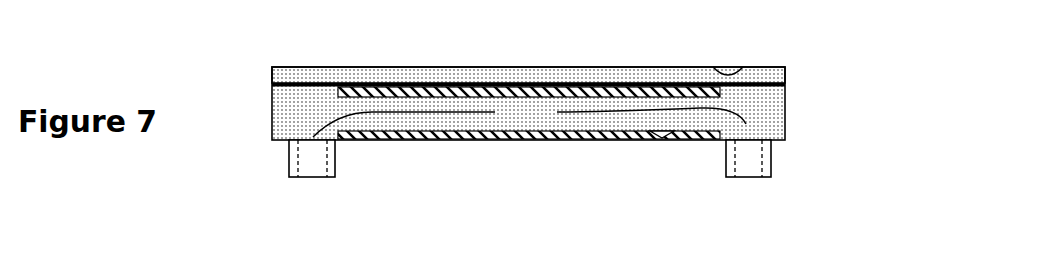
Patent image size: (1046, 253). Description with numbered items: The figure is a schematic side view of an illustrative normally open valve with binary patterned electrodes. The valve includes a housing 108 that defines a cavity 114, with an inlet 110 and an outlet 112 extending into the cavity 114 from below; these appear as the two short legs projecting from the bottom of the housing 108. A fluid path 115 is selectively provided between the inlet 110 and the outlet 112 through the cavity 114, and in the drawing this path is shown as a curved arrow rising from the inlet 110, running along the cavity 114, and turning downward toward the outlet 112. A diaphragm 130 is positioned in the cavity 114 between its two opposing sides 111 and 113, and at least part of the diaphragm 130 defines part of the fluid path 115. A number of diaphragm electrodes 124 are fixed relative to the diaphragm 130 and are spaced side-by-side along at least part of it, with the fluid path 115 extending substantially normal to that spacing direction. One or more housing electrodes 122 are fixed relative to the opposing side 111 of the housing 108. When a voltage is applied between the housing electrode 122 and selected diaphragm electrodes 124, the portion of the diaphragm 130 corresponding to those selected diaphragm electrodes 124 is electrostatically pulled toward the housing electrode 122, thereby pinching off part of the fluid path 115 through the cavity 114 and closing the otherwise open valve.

The housing 108 is at (258, 112).
The inlet 110 is at (307, 158).
The opposing side of the cavity 111 is at (668, 140).
The outlet 112 is at (747, 158).
The opposing side of the cavity 113 is at (746, 67).
The cavity 114 is at (547, 121).
The fluid path 115 is at (746, 124).
The housing electrode 122 is at (575, 140).
The diaphragm electrodes 124 is at (578, 83).
The diaphragm 130 is at (380, 83).